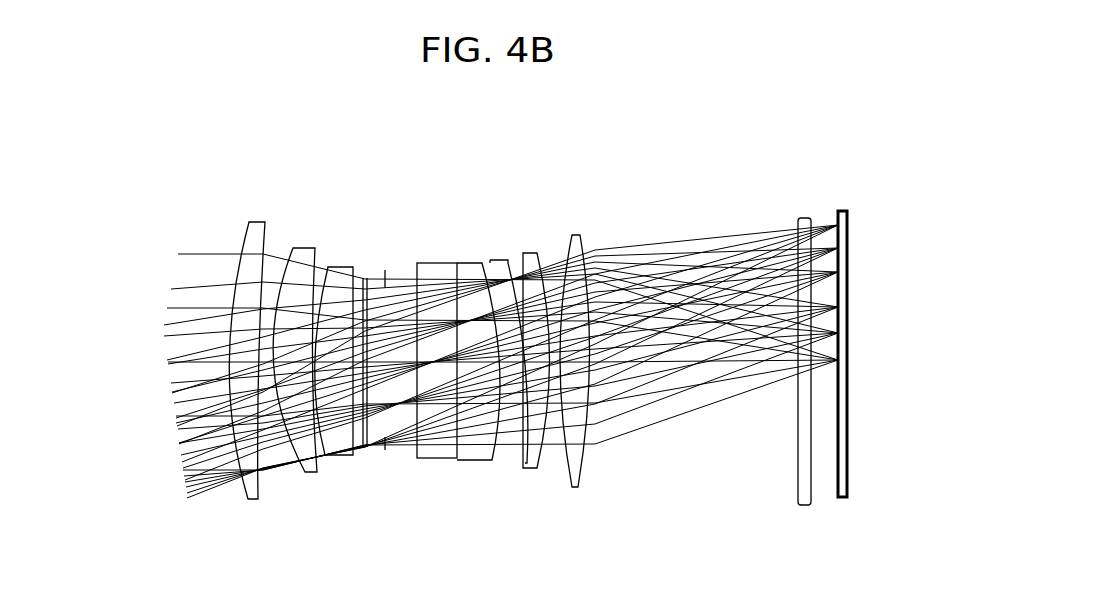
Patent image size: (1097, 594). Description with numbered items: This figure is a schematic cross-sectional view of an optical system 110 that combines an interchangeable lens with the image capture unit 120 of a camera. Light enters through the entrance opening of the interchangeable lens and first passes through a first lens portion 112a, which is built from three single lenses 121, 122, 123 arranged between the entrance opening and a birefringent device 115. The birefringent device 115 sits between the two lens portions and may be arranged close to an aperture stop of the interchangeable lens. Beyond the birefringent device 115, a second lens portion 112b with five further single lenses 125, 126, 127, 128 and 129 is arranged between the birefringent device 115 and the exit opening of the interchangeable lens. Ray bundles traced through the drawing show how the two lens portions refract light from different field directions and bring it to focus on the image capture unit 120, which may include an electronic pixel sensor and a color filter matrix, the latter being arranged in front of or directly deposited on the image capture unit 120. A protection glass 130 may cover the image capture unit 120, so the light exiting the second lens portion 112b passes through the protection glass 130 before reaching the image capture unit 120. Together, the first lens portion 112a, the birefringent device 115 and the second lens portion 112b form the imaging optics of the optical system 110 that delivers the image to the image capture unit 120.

The optical system 110 is at (645, 155).
The first lens portion 112a is at (213, 207).
The second lens portion 112b is at (403, 203).
The birefringent device 115 is at (369, 262).
The image capture unit 120 is at (843, 498).
The single lens 121 is at (250, 477).
The single lens 122 is at (303, 457).
The single lens 123 is at (343, 457).
The single lens 125 is at (425, 459).
The single lens 126 is at (470, 459).
The single lens 127 is at (501, 460).
The single lens 128 is at (545, 458).
The single lens 129 is at (580, 467).
The protection glass 130 is at (810, 505).